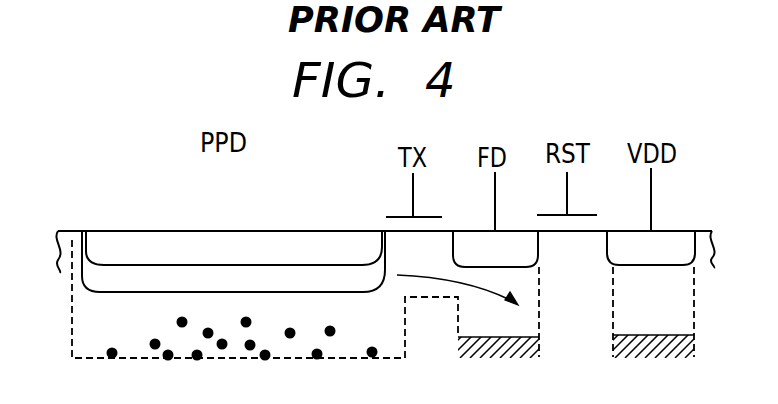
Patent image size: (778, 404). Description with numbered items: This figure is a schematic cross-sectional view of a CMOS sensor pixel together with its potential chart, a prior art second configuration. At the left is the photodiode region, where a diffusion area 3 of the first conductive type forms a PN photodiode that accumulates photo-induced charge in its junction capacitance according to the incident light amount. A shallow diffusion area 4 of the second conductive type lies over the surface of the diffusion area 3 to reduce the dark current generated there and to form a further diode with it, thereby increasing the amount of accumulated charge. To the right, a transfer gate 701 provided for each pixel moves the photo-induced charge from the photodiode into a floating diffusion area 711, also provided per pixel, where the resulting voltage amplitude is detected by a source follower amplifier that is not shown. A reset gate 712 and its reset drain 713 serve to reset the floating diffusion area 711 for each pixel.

The diffusion area 3 is at (280, 275).
The shallow diffusion area 4 is at (134, 245).
The transfer gate 701 is at (397, 210).
The floating diffusion area 711 is at (480, 247).
The reset gate 712 is at (579, 208).
The reset drain 713 is at (673, 240).